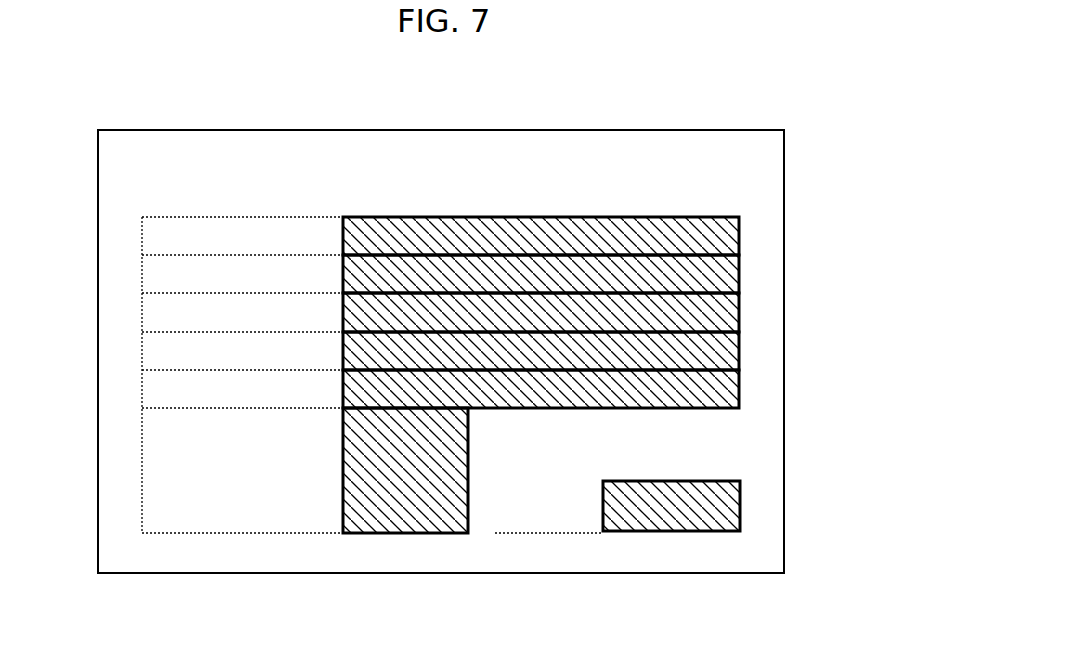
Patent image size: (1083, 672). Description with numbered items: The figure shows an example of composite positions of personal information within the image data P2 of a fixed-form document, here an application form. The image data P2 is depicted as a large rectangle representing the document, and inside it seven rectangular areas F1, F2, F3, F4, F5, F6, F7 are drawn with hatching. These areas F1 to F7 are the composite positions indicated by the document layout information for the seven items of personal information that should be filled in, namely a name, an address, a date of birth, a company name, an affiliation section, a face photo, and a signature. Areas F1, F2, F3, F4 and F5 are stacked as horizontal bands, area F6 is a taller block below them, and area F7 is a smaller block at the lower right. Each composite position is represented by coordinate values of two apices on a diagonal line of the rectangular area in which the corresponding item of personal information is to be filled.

The image data of fixed-form document P2 is at (453, 130).
The area F1 is at (740, 235).
The area F2 is at (740, 274).
The area F3 is at (740, 312).
The area F4 is at (740, 350).
The area F5 is at (740, 390).
The area F6 is at (408, 533).
The area F7 is at (740, 500).